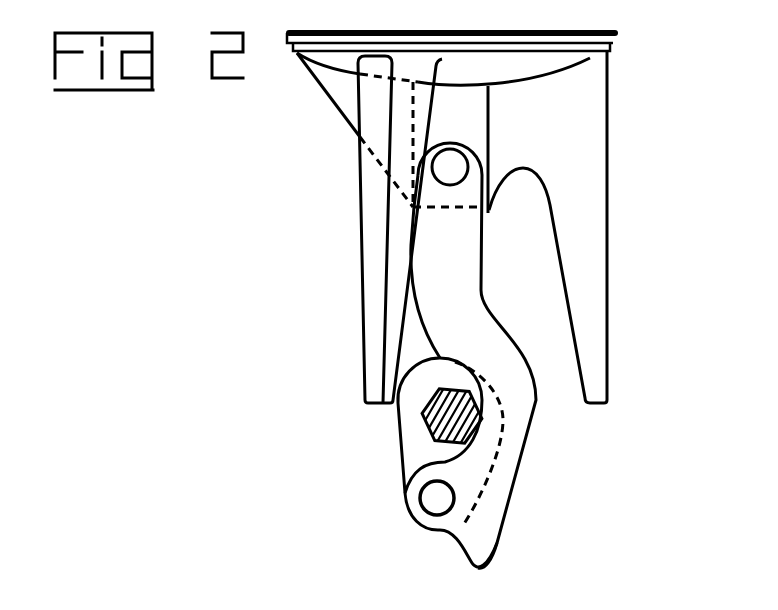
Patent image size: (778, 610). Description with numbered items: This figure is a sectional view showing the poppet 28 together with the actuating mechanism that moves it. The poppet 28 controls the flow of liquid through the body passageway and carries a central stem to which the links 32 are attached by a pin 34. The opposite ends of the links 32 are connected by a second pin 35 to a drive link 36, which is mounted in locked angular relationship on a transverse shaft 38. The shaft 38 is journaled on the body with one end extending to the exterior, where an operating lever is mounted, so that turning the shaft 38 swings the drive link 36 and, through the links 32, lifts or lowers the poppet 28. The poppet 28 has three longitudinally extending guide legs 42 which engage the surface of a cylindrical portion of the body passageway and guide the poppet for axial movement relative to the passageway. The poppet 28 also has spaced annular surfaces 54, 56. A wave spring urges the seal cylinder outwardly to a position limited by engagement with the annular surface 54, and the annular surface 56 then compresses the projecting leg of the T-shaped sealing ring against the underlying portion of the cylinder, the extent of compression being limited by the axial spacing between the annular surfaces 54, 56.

The poppet 28 is at (557, 73).
The links 32 is at (457, 257).
The pin 34 is at (475, 149).
The pin 35 is at (418, 518).
The drive link 36 is at (397, 437).
The transverse shaft 38 is at (467, 440).
The guide legs 42 is at (362, 255).
The annular surface 54 is at (610, 57).
The annular surface 56 is at (618, 48).